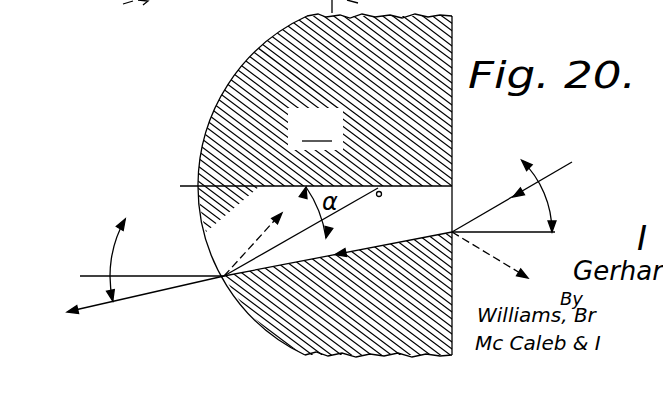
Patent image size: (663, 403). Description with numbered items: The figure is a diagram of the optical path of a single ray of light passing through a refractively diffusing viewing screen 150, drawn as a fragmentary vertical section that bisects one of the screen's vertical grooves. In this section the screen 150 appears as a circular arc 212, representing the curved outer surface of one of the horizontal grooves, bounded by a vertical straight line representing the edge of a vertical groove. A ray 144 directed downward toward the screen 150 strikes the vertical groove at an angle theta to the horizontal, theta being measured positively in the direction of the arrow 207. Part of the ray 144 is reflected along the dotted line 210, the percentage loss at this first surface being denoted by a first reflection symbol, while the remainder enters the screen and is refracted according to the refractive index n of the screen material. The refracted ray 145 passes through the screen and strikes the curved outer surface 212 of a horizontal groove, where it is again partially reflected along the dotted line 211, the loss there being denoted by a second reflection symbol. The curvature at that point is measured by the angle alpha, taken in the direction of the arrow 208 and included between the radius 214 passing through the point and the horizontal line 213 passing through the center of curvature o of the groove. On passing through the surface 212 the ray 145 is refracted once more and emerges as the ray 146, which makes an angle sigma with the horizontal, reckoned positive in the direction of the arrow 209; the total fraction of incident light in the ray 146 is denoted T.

The screen 150 is at (329, 181).
The circular arc / curved outer surface 212 is at (209, 118).
The horizontal line 213 is at (425, 194).
The ray 144 is at (556, 170).
The refracted ray 145 is at (393, 243).
The emergent ray 146 is at (143, 295).
The arrow 207 is at (545, 168).
The arrow 208 is at (327, 219).
The arrow 209 is at (110, 242).
The dotted line 210 is at (494, 254).
The dotted line 211 is at (245, 250).
The radius 214 is at (266, 266).